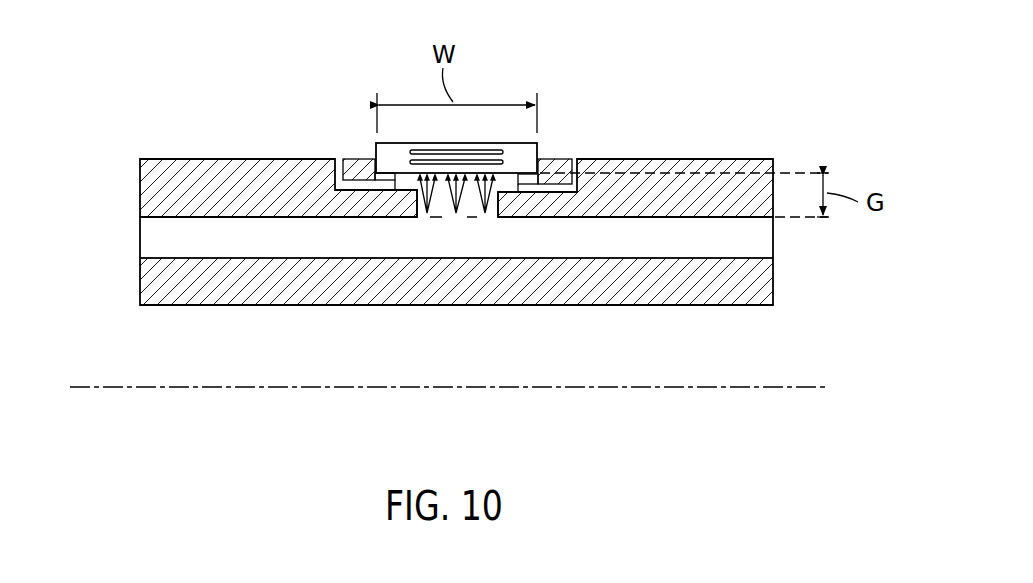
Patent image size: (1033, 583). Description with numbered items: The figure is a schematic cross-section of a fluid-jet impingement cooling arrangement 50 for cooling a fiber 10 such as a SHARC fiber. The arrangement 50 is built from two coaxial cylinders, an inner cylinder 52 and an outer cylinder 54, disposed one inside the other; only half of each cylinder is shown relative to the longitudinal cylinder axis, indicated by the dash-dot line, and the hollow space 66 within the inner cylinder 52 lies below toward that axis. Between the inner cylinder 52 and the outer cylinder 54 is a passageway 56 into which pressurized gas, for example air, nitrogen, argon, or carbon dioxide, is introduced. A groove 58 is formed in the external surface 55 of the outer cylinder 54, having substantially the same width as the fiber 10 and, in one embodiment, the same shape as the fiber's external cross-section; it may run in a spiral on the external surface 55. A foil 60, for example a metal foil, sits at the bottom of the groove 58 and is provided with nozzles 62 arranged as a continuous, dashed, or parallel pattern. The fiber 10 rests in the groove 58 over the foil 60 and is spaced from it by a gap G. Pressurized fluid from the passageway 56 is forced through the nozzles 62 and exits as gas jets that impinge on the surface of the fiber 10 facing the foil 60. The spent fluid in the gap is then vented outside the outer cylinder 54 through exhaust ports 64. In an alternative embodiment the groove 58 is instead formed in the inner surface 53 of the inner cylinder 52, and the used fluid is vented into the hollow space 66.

The fiber 10 is at (483, 140).
The fluid-jet impingement cooling arrangement 50 is at (570, 77).
The inner cylinder 52 is at (143, 283).
The inner surface of inner cylinder 53 is at (223, 305).
The outer cylinder 54 is at (140, 196).
The external surface of outer cylinder 55 is at (195, 158).
The passageway 56 is at (143, 247).
The groove 58 is at (405, 183).
The foil 60 is at (472, 220).
The nozzles 62 is at (430, 218).
The exhaust ports 64 is at (338, 158).
The hollow space 66 is at (655, 356).